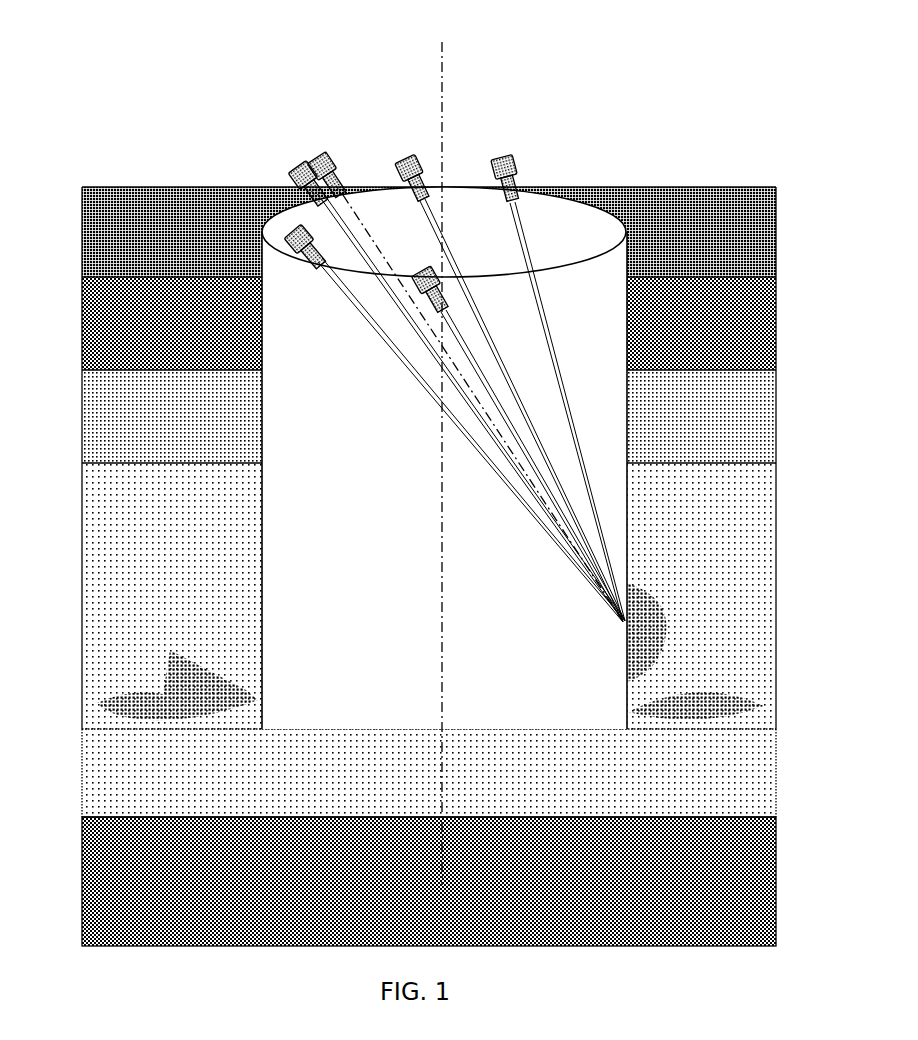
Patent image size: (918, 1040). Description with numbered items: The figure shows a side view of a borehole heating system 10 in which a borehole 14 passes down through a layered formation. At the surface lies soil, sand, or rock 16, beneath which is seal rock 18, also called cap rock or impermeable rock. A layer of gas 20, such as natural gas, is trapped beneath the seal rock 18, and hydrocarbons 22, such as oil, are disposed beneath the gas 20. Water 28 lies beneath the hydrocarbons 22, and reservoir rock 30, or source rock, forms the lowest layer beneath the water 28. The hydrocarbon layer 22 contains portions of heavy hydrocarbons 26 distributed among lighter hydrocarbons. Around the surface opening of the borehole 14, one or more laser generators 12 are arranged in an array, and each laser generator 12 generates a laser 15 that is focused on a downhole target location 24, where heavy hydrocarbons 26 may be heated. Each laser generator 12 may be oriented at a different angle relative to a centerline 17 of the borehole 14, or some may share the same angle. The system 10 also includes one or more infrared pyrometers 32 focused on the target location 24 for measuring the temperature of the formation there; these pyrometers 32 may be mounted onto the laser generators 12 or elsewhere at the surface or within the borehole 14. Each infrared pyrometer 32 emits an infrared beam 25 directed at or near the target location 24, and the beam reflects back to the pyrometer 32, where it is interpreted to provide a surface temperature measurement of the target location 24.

The borehole heating system 10 is at (150, 124).
The laser generator 12 is at (500, 150).
The borehole 14 is at (566, 228).
The laser 15 is at (422, 390).
The soil, sand, or rock 16 is at (762, 247).
The centerline 17 is at (444, 57).
The seal rock 18 is at (762, 336).
The layer of gas 20 is at (762, 422).
The hydrocarbons 22 is at (762, 519).
The target location 24 is at (656, 607).
The infrared beam 25 is at (358, 218).
The heavy hydrocarbons 26 is at (760, 707).
The water 28 is at (760, 780).
The reservoir rock 30 is at (762, 883).
The infrared pyrometer 32 is at (328, 152).